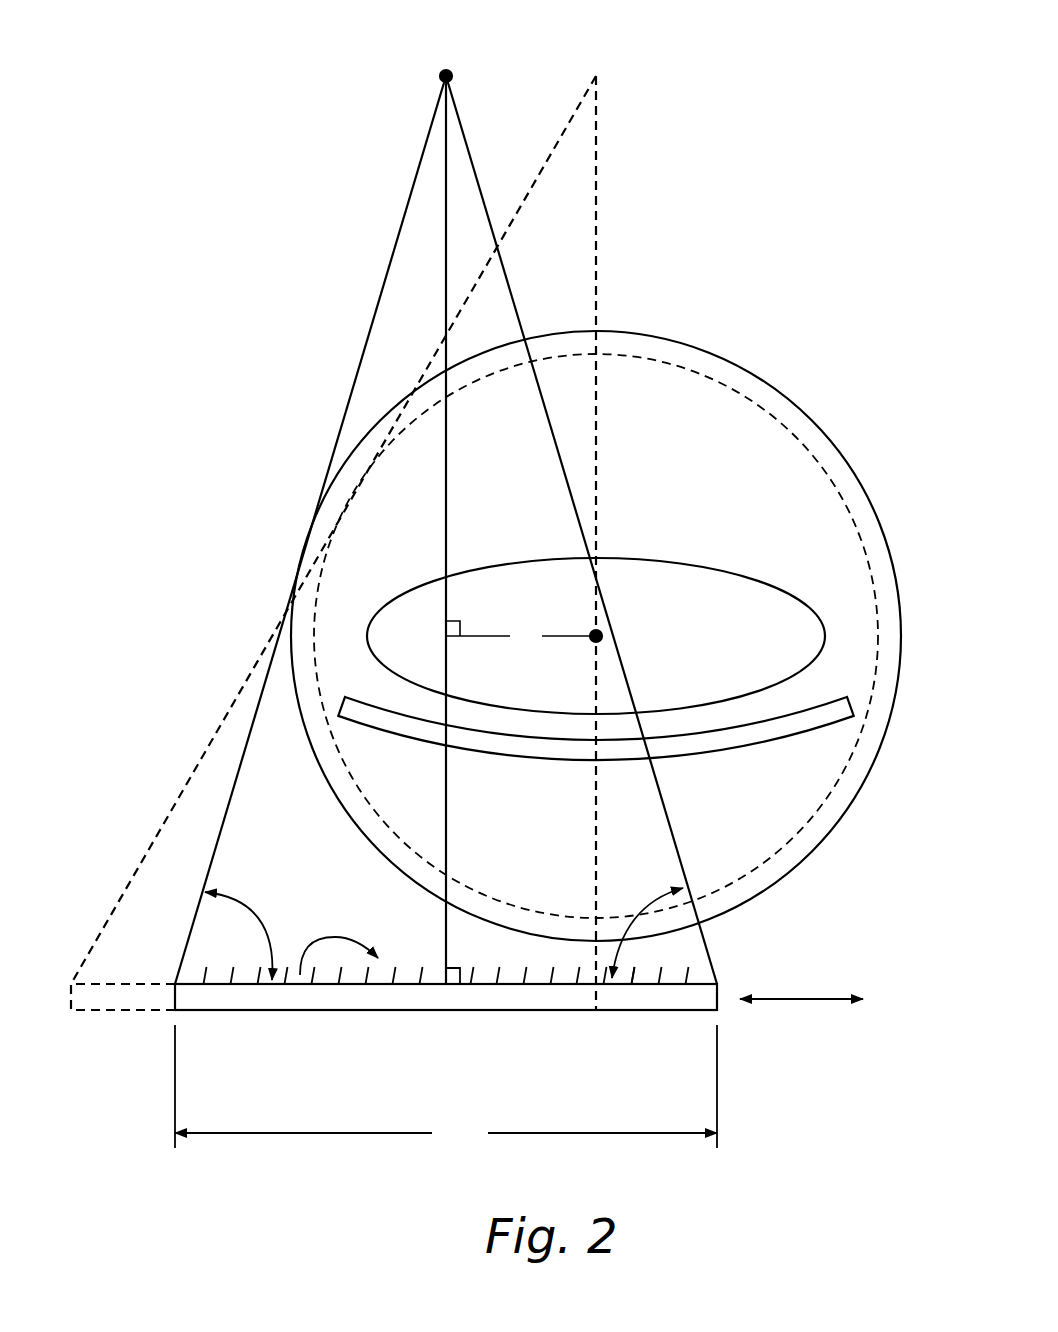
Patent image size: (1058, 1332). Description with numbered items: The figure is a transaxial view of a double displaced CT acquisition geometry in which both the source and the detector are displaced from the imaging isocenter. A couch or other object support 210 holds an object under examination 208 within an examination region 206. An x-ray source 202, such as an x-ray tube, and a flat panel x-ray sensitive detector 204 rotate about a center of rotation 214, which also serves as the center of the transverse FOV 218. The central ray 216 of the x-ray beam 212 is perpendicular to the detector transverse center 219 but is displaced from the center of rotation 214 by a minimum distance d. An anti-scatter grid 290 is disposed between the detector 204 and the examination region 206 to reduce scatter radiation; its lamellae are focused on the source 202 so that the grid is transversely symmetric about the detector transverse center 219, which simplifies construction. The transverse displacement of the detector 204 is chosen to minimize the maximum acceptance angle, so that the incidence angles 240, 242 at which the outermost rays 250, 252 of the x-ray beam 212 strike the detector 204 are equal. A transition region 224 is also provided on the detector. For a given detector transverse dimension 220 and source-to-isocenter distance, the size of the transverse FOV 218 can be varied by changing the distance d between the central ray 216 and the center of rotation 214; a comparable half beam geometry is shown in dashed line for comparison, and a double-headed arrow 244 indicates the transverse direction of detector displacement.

The x-ray source 202 is at (443, 73).
The x-ray sensitive detector 204 is at (529, 997).
The examination region 206 is at (797, 533).
The object under examination 208 is at (668, 558).
The object support 210 is at (707, 745).
The x-ray beam 212 is at (408, 255).
The center of rotation 214 is at (591, 641).
The central ray 216 is at (445, 285).
The transverse FOV 218 is at (738, 368).
The detector transverse center 219 is at (444, 978).
The detector transverse dimension 220 is at (446, 1087).
The transition region 224 is at (667, 997).
The incidence angle 240 is at (262, 928).
The incidence angle 242 is at (640, 928).
The detector shift direction 244 is at (800, 999).
The outermost ray 250 is at (222, 826).
The outermost ray 252 is at (680, 848).
The anti-scatter grid 290 is at (300, 975).